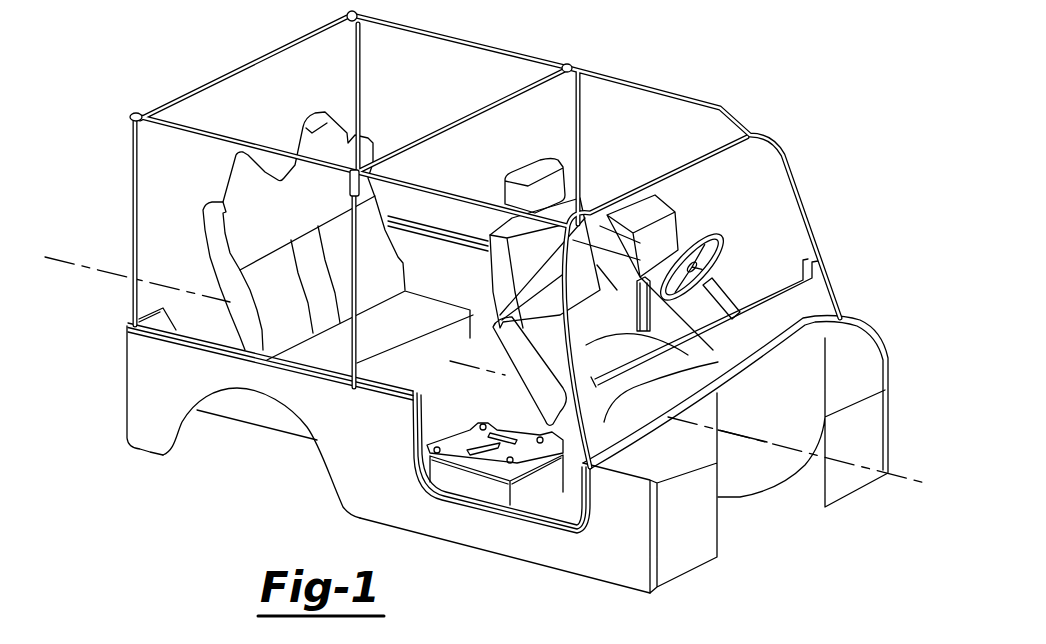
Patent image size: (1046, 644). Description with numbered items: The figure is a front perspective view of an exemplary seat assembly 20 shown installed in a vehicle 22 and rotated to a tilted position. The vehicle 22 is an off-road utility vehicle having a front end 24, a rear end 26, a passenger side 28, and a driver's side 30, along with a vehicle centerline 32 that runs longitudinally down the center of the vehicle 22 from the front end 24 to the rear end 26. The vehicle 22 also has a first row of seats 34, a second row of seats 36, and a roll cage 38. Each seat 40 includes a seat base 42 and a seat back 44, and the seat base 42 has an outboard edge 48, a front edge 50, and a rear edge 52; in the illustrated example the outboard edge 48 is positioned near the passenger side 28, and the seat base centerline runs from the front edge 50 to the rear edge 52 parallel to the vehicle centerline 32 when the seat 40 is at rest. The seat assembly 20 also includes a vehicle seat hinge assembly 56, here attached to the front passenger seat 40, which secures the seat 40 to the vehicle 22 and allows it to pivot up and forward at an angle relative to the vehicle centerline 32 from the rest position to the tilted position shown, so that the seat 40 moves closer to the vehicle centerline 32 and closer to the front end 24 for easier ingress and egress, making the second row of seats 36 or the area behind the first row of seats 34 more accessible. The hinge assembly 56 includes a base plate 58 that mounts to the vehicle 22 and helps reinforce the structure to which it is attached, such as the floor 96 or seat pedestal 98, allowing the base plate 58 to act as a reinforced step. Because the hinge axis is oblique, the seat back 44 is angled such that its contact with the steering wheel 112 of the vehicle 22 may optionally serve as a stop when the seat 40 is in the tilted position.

The seat assembly 20 is at (580, 507).
The vehicle 22 is at (96, 128).
The front end 24 is at (853, 368).
The rear end 26 is at (355, 450).
The passenger side 28 is at (333, 425).
The driver's side 30 is at (436, 266).
The vehicle centerline 32 is at (866, 466).
The first row of seats 34 is at (616, 163).
The second row of seats 36 is at (186, 234).
The roll cage 38 is at (233, 73).
The seat 40 is at (699, 198).
The seat base 42 is at (490, 373).
The seat back 44 is at (590, 295).
The outboard edge 48 is at (513, 352).
The front edge 50 is at (600, 437).
The rear edge 52 is at (607, 286).
The vehicle seat hinge assembly 56 is at (467, 482).
The base plate 58 is at (487, 420).
The floor 96 is at (570, 498).
The seat pedestal 98 is at (522, 508).
The steering wheel 112 is at (687, 257).